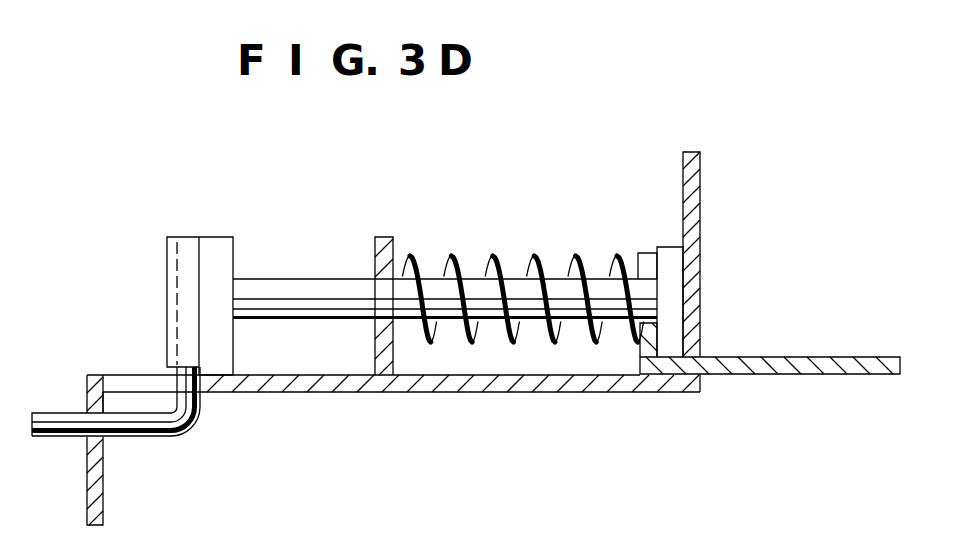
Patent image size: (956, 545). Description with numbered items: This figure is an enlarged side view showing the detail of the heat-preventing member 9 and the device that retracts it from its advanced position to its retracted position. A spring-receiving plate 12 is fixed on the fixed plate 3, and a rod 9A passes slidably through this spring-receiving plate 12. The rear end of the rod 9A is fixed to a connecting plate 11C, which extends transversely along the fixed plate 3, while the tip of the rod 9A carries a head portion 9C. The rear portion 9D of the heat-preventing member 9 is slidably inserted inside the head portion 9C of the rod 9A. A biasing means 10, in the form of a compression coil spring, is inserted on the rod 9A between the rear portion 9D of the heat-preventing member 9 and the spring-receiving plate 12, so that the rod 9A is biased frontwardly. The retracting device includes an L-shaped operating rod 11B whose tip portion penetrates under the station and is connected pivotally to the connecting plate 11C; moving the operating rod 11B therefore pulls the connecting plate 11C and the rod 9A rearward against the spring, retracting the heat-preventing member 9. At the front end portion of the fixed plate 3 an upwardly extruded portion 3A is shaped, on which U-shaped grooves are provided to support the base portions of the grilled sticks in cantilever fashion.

The fixed plate 3 is at (296, 380).
The upwardly extruded portion 3A is at (700, 210).
The heat-preventing member 9 is at (763, 367).
The rod 9A is at (297, 292).
The head portion 9C is at (670, 257).
The rear portion 9D is at (648, 265).
The biasing means 10 is at (462, 254).
The operating rod 11B is at (147, 422).
The connecting plate 11C is at (218, 248).
The spring-receiving plate 12 is at (385, 242).